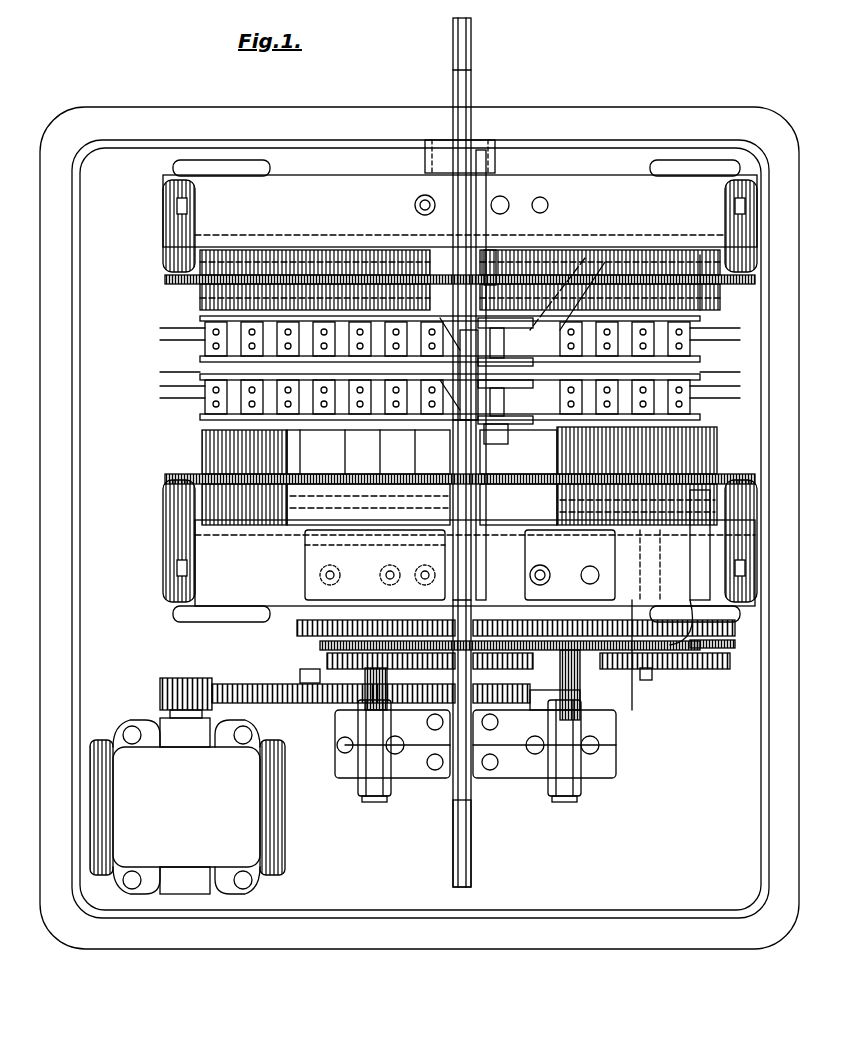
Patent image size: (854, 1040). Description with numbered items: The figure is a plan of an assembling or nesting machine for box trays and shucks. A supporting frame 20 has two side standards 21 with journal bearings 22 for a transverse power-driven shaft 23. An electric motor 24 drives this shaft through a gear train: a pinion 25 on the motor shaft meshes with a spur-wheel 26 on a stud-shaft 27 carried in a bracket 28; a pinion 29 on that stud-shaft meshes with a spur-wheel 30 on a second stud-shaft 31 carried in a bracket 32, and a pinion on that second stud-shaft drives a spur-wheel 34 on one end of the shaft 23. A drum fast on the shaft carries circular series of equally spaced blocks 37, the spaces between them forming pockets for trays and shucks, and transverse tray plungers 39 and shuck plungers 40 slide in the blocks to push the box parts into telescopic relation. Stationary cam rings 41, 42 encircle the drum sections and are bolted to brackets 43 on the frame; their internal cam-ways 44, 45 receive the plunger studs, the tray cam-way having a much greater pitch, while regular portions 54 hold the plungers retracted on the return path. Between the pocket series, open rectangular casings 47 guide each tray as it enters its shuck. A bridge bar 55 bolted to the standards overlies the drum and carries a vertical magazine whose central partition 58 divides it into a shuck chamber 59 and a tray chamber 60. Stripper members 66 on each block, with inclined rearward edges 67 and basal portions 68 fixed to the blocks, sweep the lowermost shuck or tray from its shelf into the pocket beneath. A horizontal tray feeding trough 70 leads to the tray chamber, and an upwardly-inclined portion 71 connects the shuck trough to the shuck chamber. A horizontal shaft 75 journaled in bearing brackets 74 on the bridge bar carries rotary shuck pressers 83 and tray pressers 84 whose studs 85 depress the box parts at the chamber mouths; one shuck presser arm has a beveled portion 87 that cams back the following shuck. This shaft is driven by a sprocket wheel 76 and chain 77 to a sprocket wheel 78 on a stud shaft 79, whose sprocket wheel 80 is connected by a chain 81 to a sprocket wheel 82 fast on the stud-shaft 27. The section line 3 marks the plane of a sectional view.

The section line 3- 3 is at (440, 135).
The supporting frame 20 is at (305, 950).
The side standards 21 is at (460, 391).
The journal bearings 22 is at (410, 228).
The power-driven shaft 23 is at (470, 140).
The electric motor 24 is at (187, 806).
The pinion 25 is at (160, 690).
The spur-wheel 26 is at (240, 685).
The stud-shaft 27 is at (362, 530).
The bracket 28 is at (332, 530).
The pinion 29 is at (330, 672).
The spur-wheel 30 is at (690, 668).
The stud-shaft 31 is at (560, 540).
The bracket 32 is at (590, 540).
The spur-wheel 34 is at (295, 628).
The blocks 37 is at (328, 322).
The tray plungers 39 is at (200, 418).
The shuck plungers 40 is at (240, 320).
The cam ring 41 is at (722, 460).
The cam ring 42 is at (242, 262).
The brackets 43 is at (163, 230).
The tray-plunger cam-way 44 is at (653, 565).
The shuck-plunger cam-way 45 is at (700, 255).
The casing 47 is at (235, 376).
The regular portions of the cam-ways 54 is at (195, 250).
The bridge bar 55 is at (415, 200).
The central partition 58 is at (460, 372).
The shuck chamber 59 is at (505, 325).
The tray chamber 60 is at (500, 392).
The stripper members 66 is at (721, 370).
The inclined rearward edges 67 is at (205, 340).
The basal portions 68 is at (215, 345).
The tray feeding trough 70 is at (472, 855).
The upwardly-inclined portion 71 is at (453, 92).
The bearing brackets 74 is at (500, 270).
The horizontal shaft 75 is at (488, 290).
The sprocket wheel 76 is at (500, 710).
The chain 77 is at (649, 661).
The sprocket wheel 78 is at (685, 603).
The stud shaft 79 is at (650, 678).
The sprocket wheel 80 is at (700, 645).
The chain 81 is at (395, 675).
The sprocket wheel 82 is at (315, 647).
The shuck pressers 83 is at (512, 347).
The tray pressers 84 is at (513, 408).
The studs 85 is at (455, 340).
The beveled portion 87 is at (581, 275).